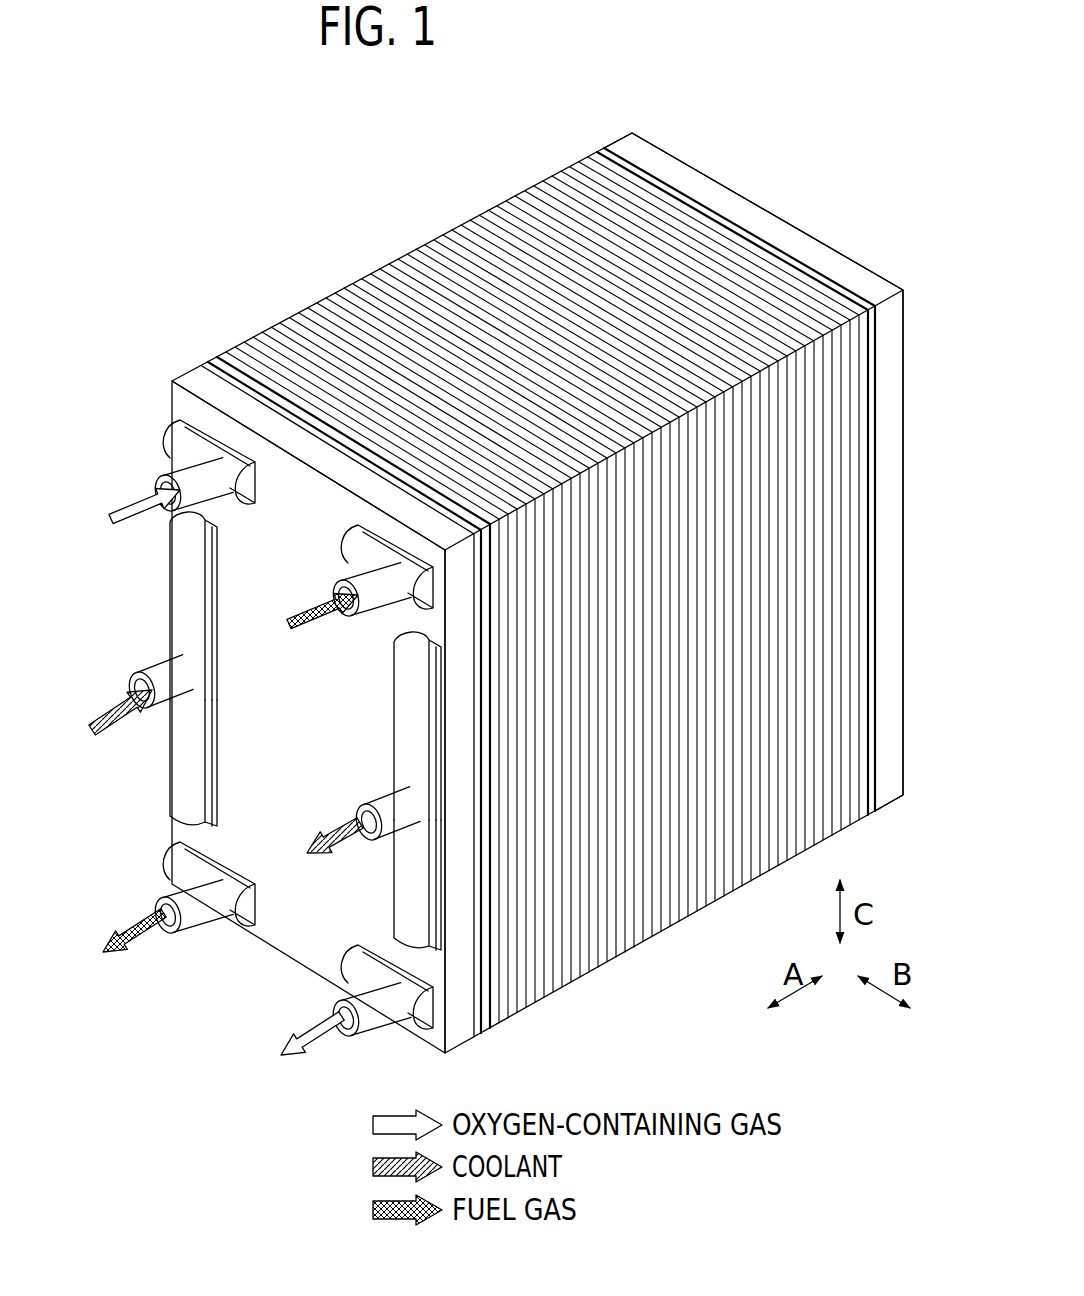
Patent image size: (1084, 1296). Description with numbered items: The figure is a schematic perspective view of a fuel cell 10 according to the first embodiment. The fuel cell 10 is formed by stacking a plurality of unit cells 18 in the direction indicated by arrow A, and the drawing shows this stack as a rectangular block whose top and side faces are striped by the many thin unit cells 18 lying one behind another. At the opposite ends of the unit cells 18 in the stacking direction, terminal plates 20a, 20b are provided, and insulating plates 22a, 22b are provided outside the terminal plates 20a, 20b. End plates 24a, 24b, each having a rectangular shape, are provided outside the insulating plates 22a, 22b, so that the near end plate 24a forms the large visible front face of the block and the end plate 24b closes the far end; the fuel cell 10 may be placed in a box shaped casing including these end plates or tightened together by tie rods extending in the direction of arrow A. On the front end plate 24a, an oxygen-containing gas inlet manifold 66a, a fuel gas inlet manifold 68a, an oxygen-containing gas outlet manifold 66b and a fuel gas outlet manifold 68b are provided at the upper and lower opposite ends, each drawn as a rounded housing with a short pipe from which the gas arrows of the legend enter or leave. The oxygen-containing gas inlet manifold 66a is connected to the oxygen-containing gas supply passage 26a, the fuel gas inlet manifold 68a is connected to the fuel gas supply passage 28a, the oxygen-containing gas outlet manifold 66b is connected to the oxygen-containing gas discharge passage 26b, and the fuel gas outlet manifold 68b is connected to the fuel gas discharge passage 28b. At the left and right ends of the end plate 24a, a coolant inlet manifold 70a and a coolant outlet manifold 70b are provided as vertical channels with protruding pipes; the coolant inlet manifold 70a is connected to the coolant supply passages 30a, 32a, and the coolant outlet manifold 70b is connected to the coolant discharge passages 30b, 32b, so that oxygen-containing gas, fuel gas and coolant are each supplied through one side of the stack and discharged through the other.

The fuel cell 10 is at (508, 93).
The unit cell 18 is at (394, 250).
The terminal plate 20a is at (260, 388).
The terminal plate 20b is at (768, 244).
The insulating plate 22a is at (231, 378).
The insulating plate 22b is at (806, 260).
The end plate 24a is at (172, 379).
The end plate 24b is at (838, 246).
The oxygen-containing gas supply passage 26a is at (175, 430).
The oxygen-containing gas discharge passage 26b is at (357, 967).
The fuel gas supply passage 28a is at (347, 537).
The fuel gas discharge passage 28b is at (180, 866).
The coolant supply passage 30a is at (190, 569).
The coolant discharge passage 30b is at (413, 677).
The coolant supply passage 32a is at (186, 779).
The coolant discharge passage 32b is at (410, 889).
The oxygen-containing gas inlet manifold 66a is at (178, 455).
The oxygen-containing gas outlet manifold 66b is at (342, 999).
The fuel gas inlet manifold 68a is at (347, 556).
The fuel gas outlet manifold 68b is at (170, 888).
The coolant inlet manifold 70a is at (177, 611).
The coolant outlet manifold 70b is at (403, 719).